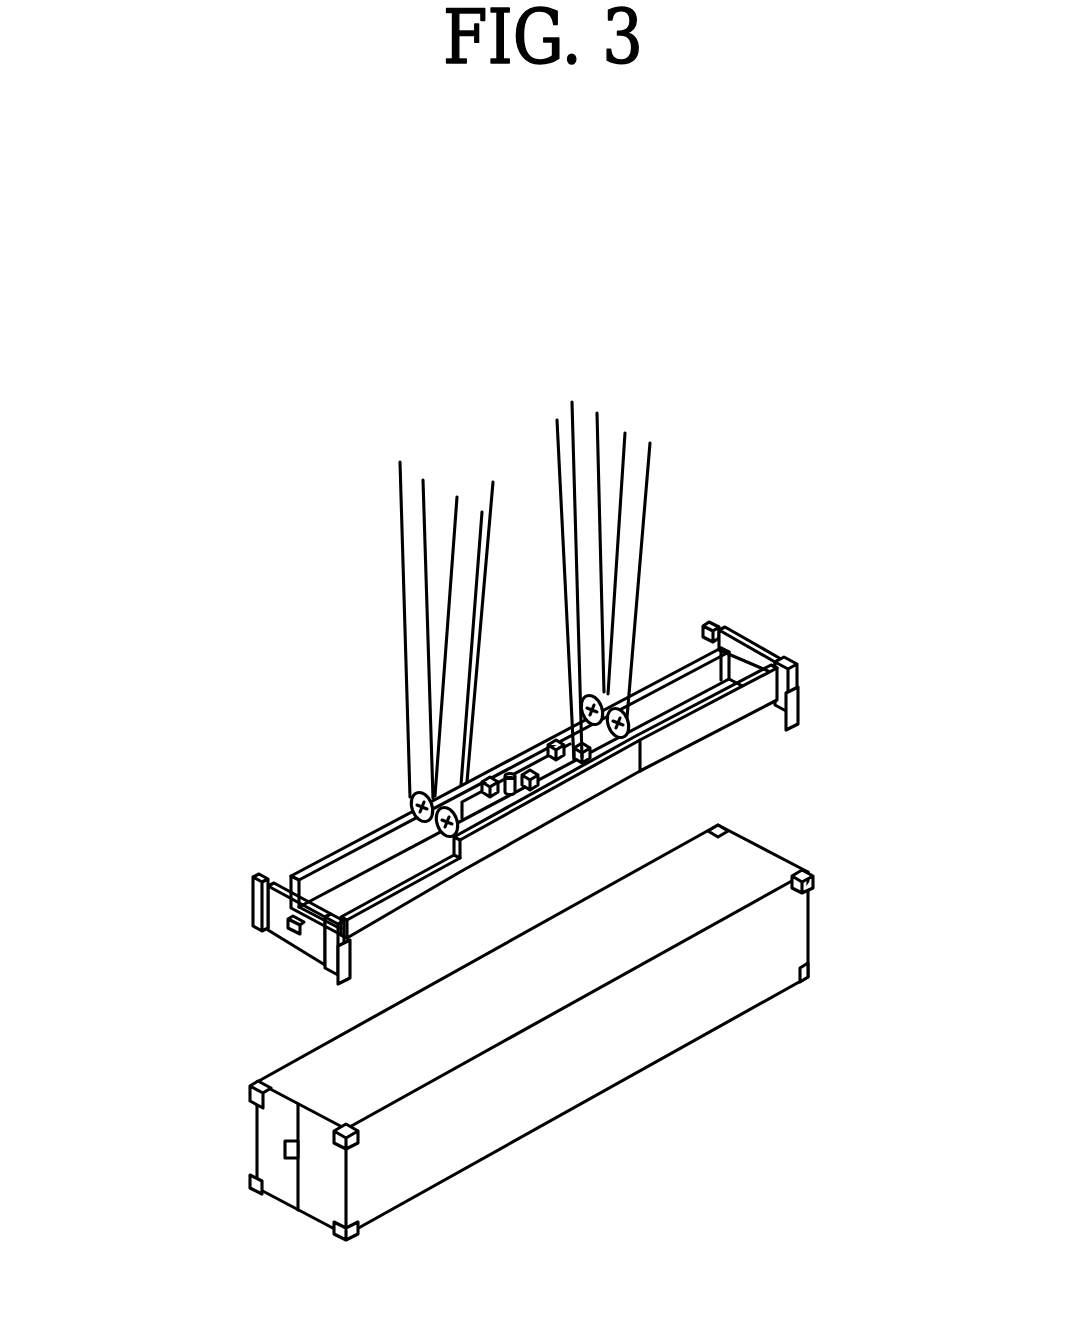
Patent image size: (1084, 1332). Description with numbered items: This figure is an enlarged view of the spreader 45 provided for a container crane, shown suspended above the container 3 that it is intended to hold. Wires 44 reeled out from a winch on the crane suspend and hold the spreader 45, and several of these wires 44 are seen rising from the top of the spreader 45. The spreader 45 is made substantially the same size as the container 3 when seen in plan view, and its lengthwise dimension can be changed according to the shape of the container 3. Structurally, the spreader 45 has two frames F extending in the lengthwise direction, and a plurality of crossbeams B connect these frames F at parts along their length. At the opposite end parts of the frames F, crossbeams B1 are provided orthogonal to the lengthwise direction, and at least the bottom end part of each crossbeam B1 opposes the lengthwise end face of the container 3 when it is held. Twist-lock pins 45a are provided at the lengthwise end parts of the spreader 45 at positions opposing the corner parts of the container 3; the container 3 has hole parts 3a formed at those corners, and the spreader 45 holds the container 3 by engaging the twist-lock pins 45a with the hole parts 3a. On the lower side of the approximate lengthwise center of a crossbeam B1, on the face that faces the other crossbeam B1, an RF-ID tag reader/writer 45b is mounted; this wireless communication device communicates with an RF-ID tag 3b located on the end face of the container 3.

The container 3 is at (810, 925).
The hole parts 3a is at (810, 868).
The RF-ID tag 3b is at (286, 1149).
The wires 44 is at (404, 622).
The spreader 45 is at (797, 676).
The twist-lock pins 45a is at (327, 970).
The RF-ID tag reader/writer 45b is at (296, 919).
The crossbeams B is at (541, 742).
The crossbeams B1 is at (745, 645).
The frames F is at (374, 830).